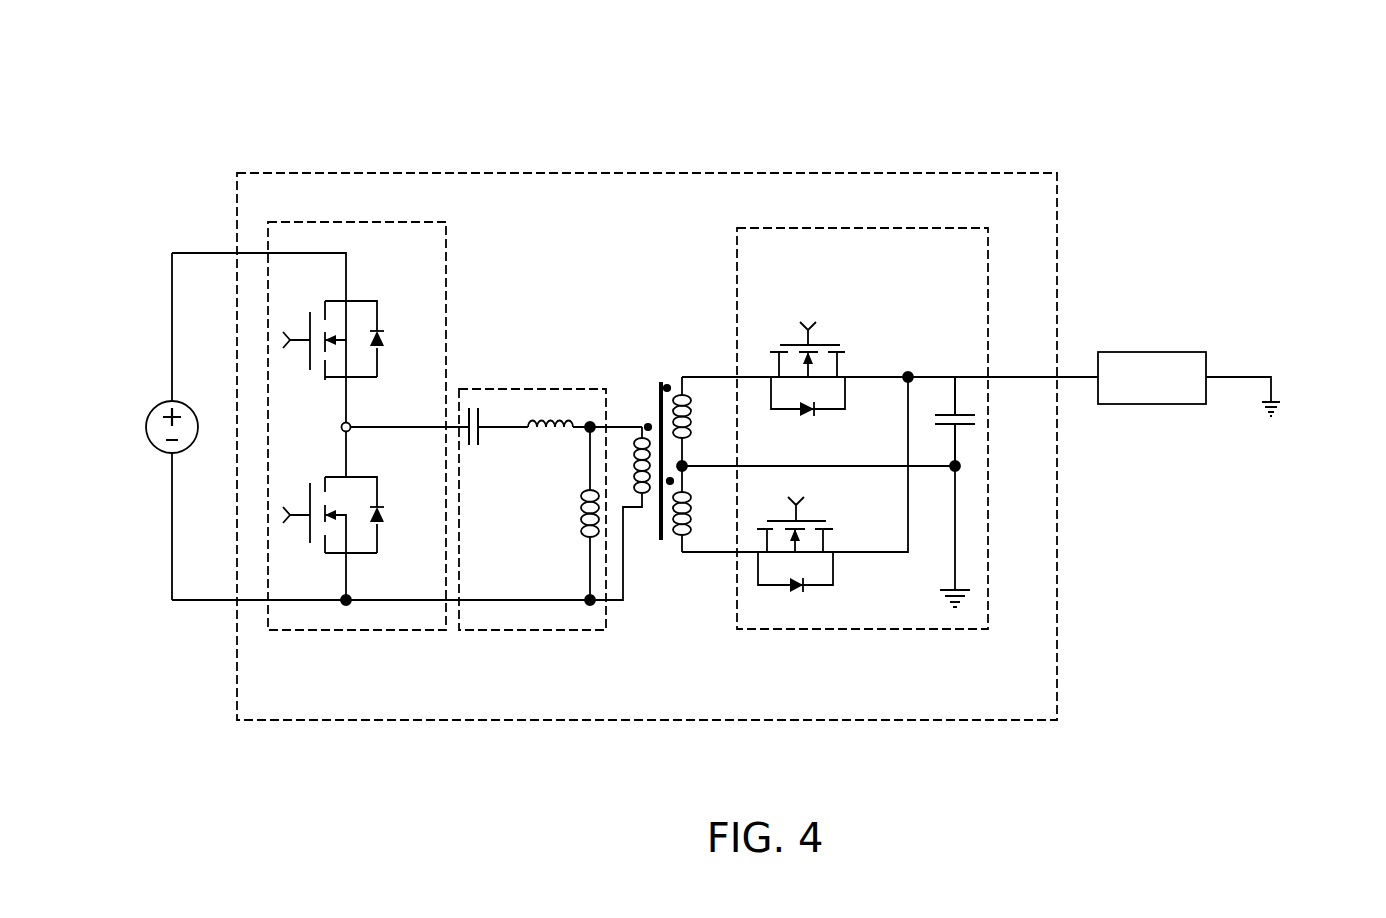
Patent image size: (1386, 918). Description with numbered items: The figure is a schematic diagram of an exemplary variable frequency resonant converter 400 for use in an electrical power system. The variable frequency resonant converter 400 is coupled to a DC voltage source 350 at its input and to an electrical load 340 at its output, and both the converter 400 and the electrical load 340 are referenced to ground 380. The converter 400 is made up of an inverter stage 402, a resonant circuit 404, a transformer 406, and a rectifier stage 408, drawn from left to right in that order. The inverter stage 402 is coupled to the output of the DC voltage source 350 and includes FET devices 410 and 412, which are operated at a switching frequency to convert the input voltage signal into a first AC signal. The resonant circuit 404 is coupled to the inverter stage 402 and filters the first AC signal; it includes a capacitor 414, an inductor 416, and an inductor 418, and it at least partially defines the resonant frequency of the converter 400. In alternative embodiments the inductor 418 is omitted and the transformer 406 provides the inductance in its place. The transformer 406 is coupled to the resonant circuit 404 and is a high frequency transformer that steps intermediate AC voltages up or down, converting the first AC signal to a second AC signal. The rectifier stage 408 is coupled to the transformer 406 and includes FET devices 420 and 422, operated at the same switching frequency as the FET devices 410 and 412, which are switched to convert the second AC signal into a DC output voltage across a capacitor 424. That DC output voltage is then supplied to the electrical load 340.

The variable frequency resonant converter 400 is at (1053, 102).
The DC voltage source 350 is at (150, 418).
The inverter stage 402 is at (365, 632).
The resonant circuit 404 is at (532, 632).
The transformer 406 is at (645, 398).
The rectifier stage 408 is at (845, 630).
The field effect transistor device 410 is at (357, 286).
The field effect transistor device 412 is at (362, 572).
The capacitor 414 is at (473, 405).
The inductor 416 is at (536, 418).
The inductor 418 is at (580, 516).
The field effect transistor device 420 is at (851, 334).
The field effect transistor device 422 is at (763, 603).
The capacitor 424 is at (967, 418).
The electrical load 340 is at (1152, 352).
The ground 380 is at (963, 580).